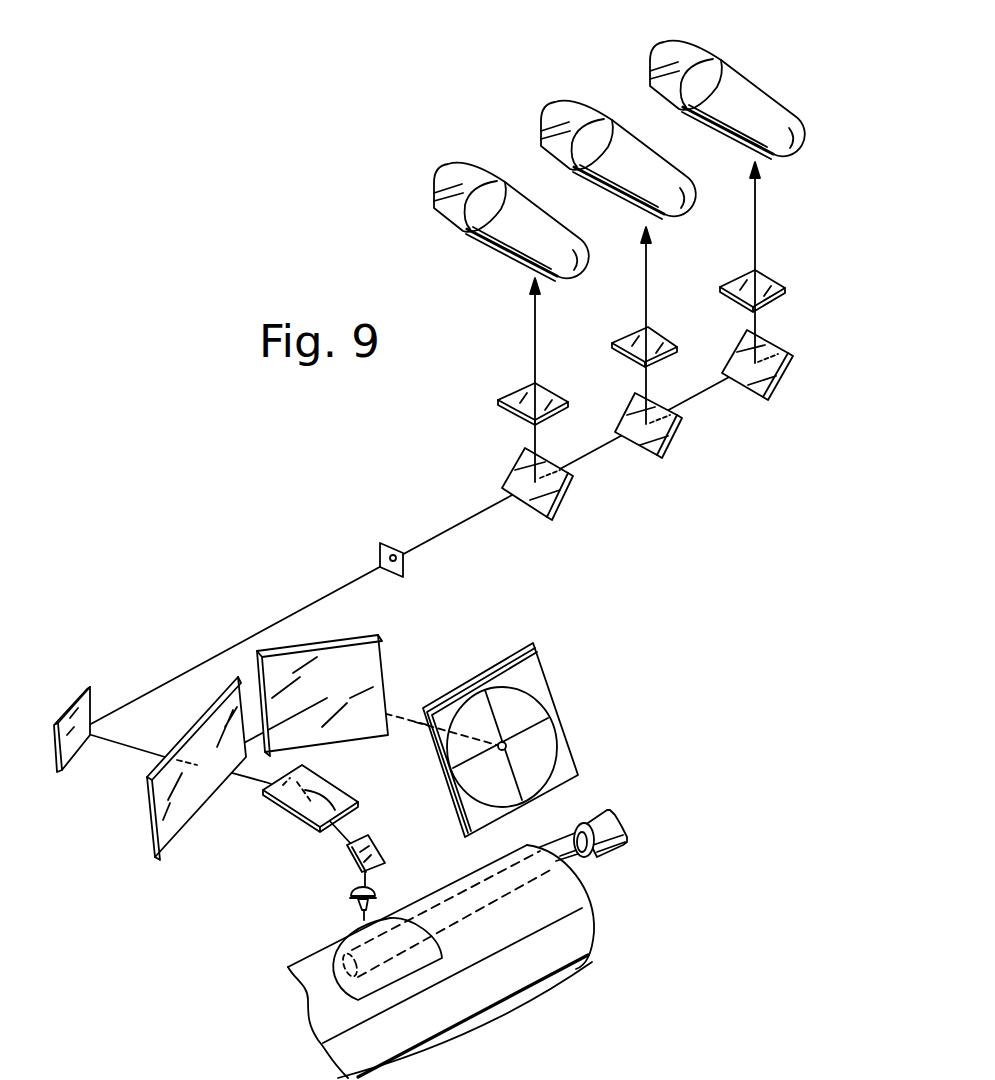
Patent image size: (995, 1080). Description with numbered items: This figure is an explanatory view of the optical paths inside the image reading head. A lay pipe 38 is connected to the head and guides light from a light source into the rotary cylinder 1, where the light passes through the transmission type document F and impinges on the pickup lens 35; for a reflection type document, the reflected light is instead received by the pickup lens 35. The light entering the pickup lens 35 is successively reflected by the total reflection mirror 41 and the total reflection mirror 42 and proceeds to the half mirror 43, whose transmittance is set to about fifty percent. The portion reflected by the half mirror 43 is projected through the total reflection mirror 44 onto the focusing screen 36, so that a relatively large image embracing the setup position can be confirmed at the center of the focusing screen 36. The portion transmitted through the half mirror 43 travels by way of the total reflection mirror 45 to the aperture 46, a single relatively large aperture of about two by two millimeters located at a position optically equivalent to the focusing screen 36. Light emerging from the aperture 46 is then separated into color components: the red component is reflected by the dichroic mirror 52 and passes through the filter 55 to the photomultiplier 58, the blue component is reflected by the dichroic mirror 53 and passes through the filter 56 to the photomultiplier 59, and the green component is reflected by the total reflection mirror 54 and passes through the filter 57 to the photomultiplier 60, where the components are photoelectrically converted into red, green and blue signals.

The rotary cylinder 1 is at (592, 923).
The document F is at (421, 963).
The pickup lens 35 is at (357, 912).
The focusing screen 36 is at (567, 735).
The lay pipe 38 is at (618, 838).
The total reflection mirror 41 is at (384, 858).
The total reflection mirror 42 is at (297, 811).
The half mirror 43 is at (152, 825).
The total reflection mirror 44 is at (384, 658).
The total reflection mirror 45 is at (83, 693).
The aperture 46 is at (394, 547).
The dichroic mirror 52 is at (559, 487).
The dichroic mirror 53 is at (666, 437).
The total reflection mirror 54 is at (760, 393).
The filter 55 is at (521, 387).
The filter 56 is at (627, 331).
The filter 57 is at (740, 272).
The photomultiplier 58 is at (519, 252).
The photomultiplier 59 is at (521, 252).
The photomultiplier 60 is at (727, 101).